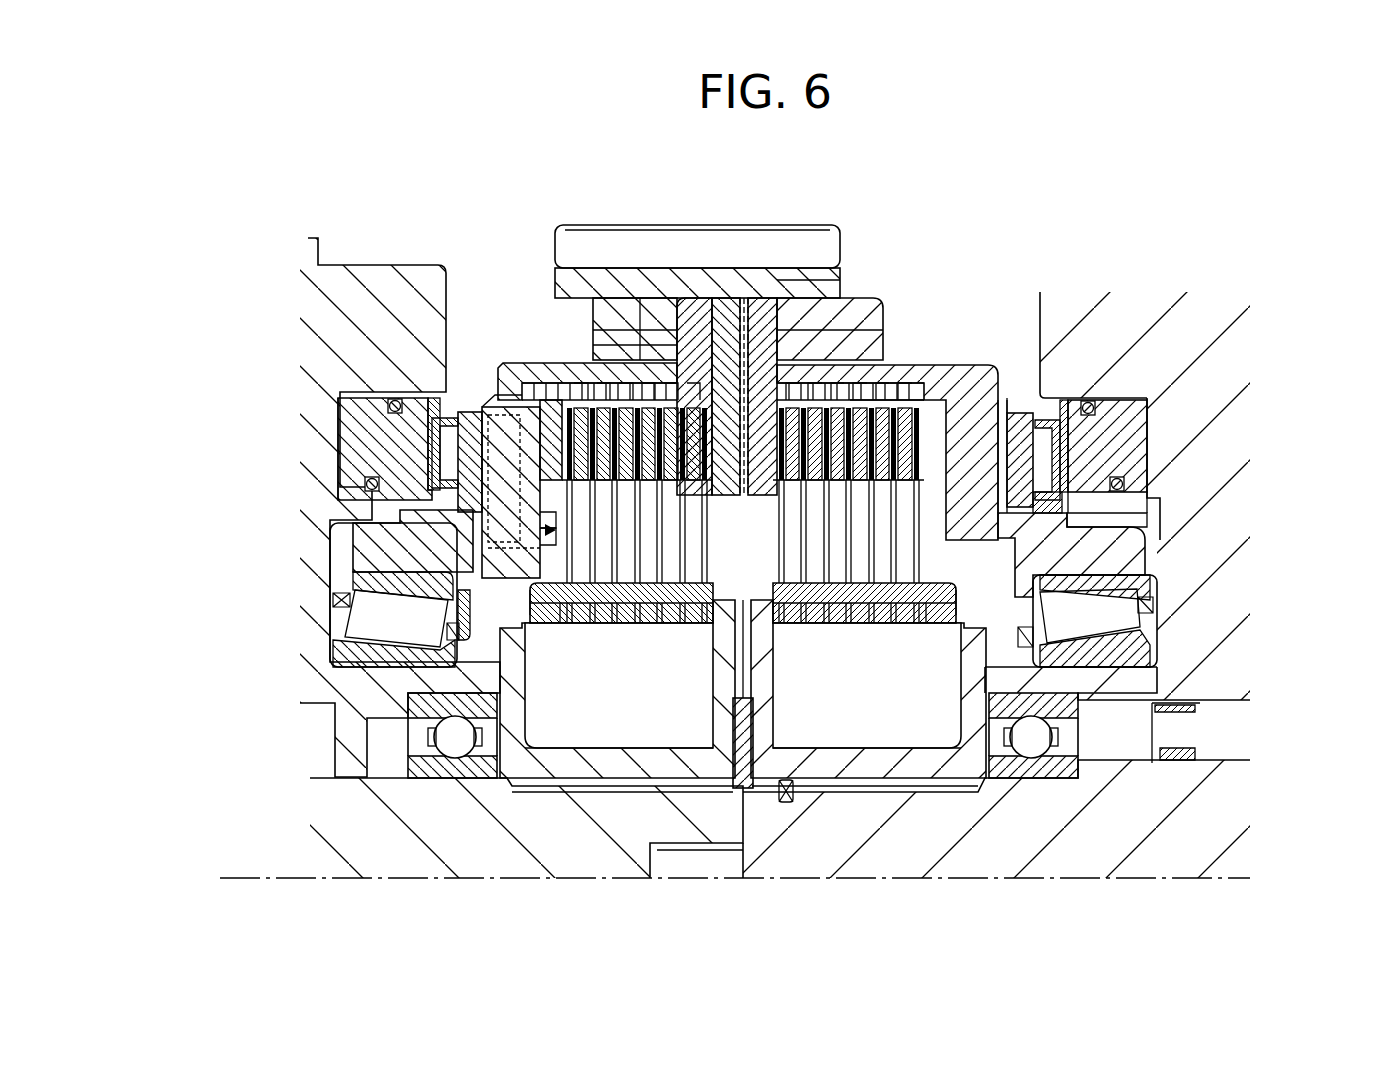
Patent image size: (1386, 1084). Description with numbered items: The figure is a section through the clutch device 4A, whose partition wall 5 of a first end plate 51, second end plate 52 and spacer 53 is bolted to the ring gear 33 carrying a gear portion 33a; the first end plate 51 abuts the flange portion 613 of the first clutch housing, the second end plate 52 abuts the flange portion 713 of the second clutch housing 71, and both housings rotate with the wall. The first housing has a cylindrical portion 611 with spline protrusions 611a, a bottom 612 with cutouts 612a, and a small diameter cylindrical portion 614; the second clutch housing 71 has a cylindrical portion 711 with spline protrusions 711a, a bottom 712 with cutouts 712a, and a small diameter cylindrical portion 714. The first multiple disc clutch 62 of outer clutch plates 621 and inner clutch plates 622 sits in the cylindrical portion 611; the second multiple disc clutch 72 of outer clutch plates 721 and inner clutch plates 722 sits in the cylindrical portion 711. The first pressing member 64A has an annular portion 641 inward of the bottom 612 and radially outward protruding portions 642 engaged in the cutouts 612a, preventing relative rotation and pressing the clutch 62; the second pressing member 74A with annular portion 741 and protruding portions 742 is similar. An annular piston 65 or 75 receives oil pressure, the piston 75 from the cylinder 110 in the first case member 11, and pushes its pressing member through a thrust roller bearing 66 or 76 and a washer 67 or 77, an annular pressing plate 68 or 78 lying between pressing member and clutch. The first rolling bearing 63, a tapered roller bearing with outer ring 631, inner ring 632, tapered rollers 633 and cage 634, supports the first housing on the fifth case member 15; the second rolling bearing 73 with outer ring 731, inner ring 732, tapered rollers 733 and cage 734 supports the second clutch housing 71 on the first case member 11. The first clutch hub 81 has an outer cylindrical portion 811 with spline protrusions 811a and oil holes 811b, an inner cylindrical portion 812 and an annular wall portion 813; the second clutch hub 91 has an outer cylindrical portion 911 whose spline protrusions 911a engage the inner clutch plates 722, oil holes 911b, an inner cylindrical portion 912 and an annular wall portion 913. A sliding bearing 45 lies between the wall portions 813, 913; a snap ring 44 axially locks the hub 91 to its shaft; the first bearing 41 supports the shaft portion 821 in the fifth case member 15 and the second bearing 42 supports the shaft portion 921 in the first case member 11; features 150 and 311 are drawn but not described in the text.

The clutch device 4A is at (1040, 223).
The partition wall 5 is at (740, 314).
The first case member 11 is at (1165, 357).
The fifth case member 15 is at (393, 268).
The ring gear 33 is at (835, 262).
The gear portion 33a is at (812, 236).
The first bearing 41 is at (450, 778).
The second bearing 42 is at (1030, 778).
The snap ring 44 is at (788, 798).
The sliding bearing 45 is at (745, 758).
The first end plate 51 is at (705, 313).
The second end plate 52 is at (765, 312).
The spacer 53 is at (744, 320).
The first multiple disc clutch 62 is at (407, 525).
The first rolling bearing 63 is at (318, 605).
The first pressing member 64A is at (360, 534).
The annular piston 65 is at (385, 430).
The thrust roller bearing 66 is at (432, 447).
The washer 67 is at (444, 460).
The annular pressing plate 68 is at (548, 418).
The second clutch housing 71 is at (1140, 568).
The second multiple disc clutch 72 is at (875, 385).
The second rolling bearing 73 is at (1174, 648).
The second pressing member 74A is at (1169, 543).
The annular piston 75 is at (1110, 432).
The thrust roller bearing 76 is at (1055, 458).
The washer 77 is at (1040, 470).
The annular pressing plate 78 is at (1010, 408).
The first clutch hub 81 is at (617, 680).
The second clutch hub 91 is at (869, 680).
The cylinder 110 is at (1152, 400).
The housing surface 150 is at (341, 400).
The flange 311 is at (640, 338).
The cylindrical portion 611 is at (598, 375).
The spline protrusions 611a is at (580, 390).
The bottom 612 is at (518, 572).
The cutouts 612a is at (495, 395).
The flange portion 613 is at (692, 310).
The small diameter cylindrical portion 614 is at (466, 597).
The outer clutch plates 621 is at (593, 373).
The inner clutch plates 622 is at (622, 345).
The outer ring 631 is at (395, 578).
The inner ring 632 is at (380, 652).
The tapered rollers 633 is at (400, 615).
The cage 634 is at (342, 600).
The annular portion 641 is at (548, 531).
The protruding portions 642 is at (548, 528).
The cylindrical portion 711 is at (935, 372).
The spline protrusions 711a is at (905, 387).
The bottom 712 is at (1020, 487).
The cutouts 712a is at (1013, 398).
The flange portion 713 is at (815, 283).
The small diameter cylindrical portion 714 is at (1110, 558).
The outer clutch plates 721 is at (850, 330).
The inner clutch plates 722 is at (860, 382).
The outer ring 731 is at (1078, 625).
The inner ring 732 is at (1082, 670).
The tapered rollers 733 is at (1093, 650).
The cage 734 is at (1075, 598).
The annular portion 741 is at (1128, 537).
The protruding portions 742 is at (1112, 516).
The outer cylindrical portion 811 is at (670, 615).
The spline tooth 811a is at (547, 595).
The oil holes 811b is at (567, 615).
The inner cylindrical portion 812 is at (667, 760).
The annular wall portion 813 is at (722, 676).
The shaft portion 821 is at (592, 870).
The outer cylindrical portion 911 is at (843, 618).
The spline protrusions 911a is at (938, 595).
The oil holes 911b is at (920, 617).
The inner cylindrical portion 912 is at (792, 755).
The annular wall portion 913 is at (768, 663).
The shaft portion 921 is at (895, 862).